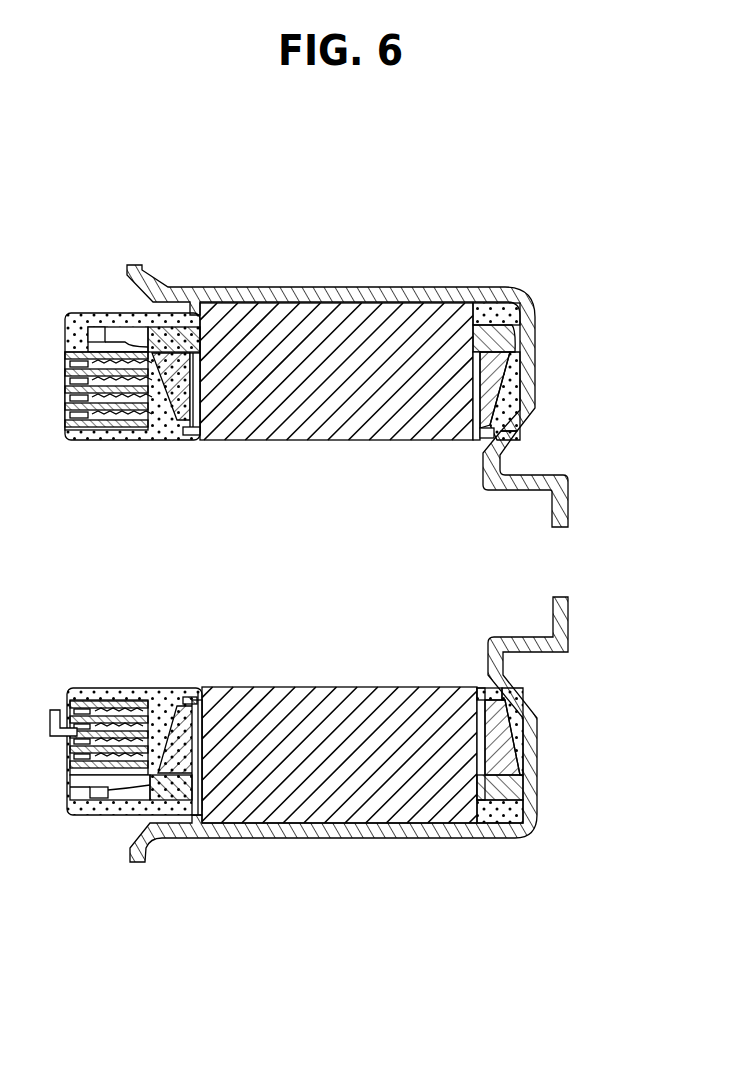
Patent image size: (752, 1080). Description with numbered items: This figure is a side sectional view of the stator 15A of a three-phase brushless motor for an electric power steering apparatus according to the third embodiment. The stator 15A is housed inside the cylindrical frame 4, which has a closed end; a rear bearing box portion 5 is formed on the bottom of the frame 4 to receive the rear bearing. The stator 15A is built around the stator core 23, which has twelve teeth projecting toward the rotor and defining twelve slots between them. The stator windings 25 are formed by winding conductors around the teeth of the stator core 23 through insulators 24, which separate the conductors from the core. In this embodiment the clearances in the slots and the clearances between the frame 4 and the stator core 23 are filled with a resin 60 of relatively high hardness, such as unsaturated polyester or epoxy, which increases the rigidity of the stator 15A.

The frame 4 is at (536, 380).
The rear bearing box portion 5 is at (568, 497).
The stator 15A is at (363, 340).
The stator core 23 is at (364, 778).
The insulator 24 is at (510, 787).
The stator winding 25 is at (497, 745).
The resin 60 is at (118, 695).